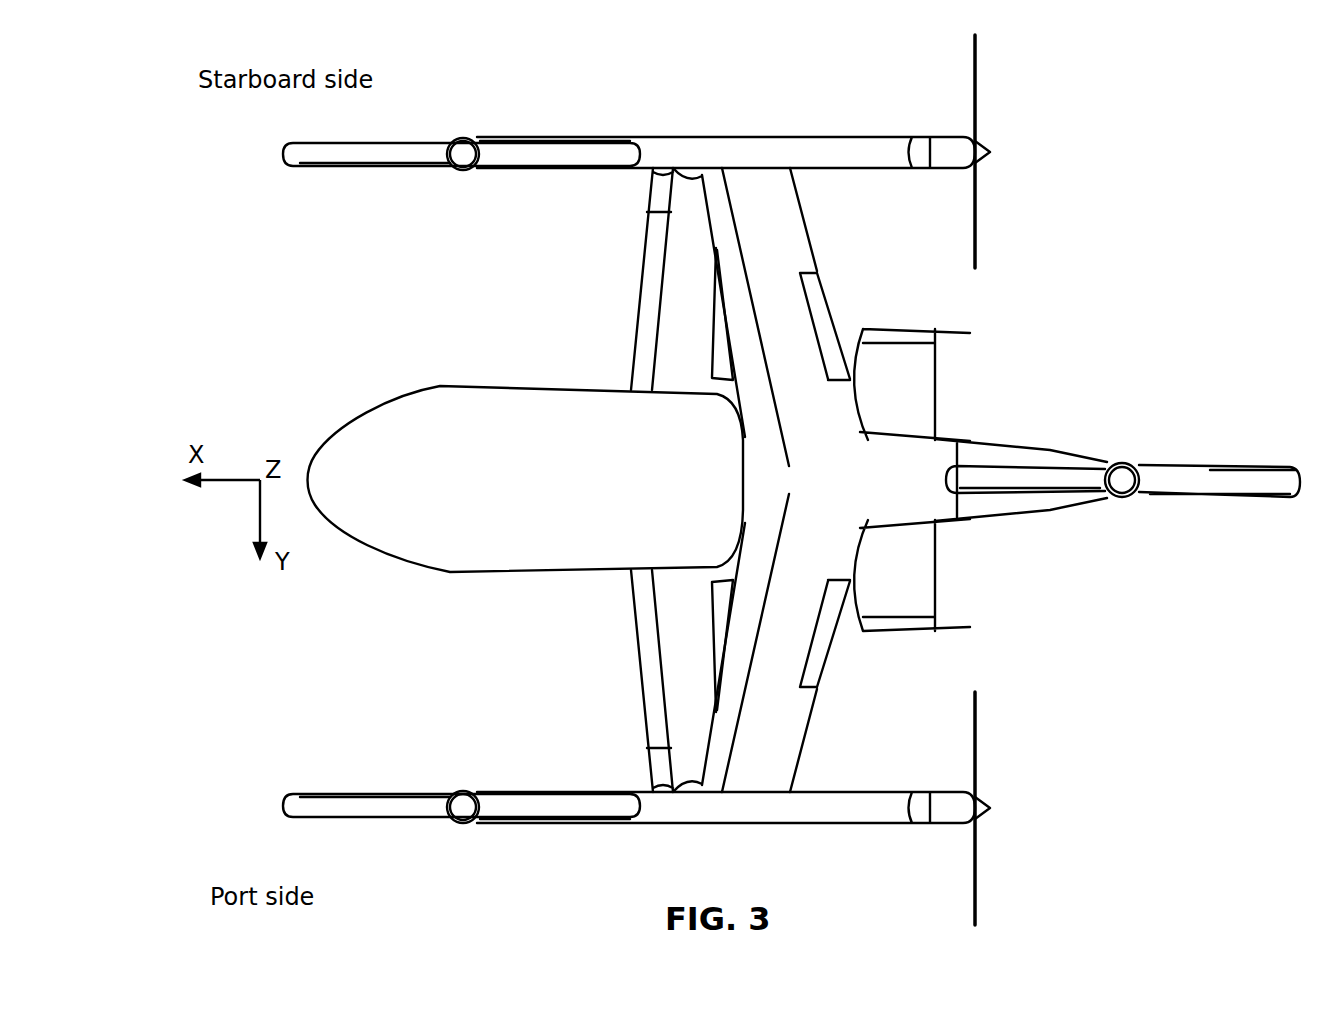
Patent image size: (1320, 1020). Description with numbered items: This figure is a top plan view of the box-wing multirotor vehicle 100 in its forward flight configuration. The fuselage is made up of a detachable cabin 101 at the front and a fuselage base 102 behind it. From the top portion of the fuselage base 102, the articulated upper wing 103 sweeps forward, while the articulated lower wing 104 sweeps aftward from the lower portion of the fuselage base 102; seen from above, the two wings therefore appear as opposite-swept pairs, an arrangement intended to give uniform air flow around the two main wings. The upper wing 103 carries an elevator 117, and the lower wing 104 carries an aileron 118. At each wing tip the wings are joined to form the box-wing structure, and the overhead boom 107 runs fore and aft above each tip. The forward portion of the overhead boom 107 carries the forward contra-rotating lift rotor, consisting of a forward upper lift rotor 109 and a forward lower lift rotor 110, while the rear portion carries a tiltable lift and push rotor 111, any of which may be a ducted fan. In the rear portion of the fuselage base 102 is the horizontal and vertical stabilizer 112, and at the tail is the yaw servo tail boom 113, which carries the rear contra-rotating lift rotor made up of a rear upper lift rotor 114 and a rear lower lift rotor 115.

The box-wing multirotor vehicle 100 is at (703, 86).
The detachable cabin 101 is at (377, 410).
The fuselage base 102 is at (907, 492).
The upper wing 103 is at (815, 252).
The lower wing 104 is at (633, 320).
The overhead boom 107 is at (648, 137).
The forward upper lift rotor 109 is at (355, 165).
The forward lower lift rotor 110 is at (463, 480).
The tiltable lift and push rotor 111 is at (977, 193).
The horizontal and vertical stabilizer 112 is at (937, 378).
The yaw servo tail boom 113 is at (1075, 467).
The rear upper lift rotor 114 is at (1263, 462).
The rear lower lift rotor 115 is at (1025, 479).
The elevator 117 is at (833, 323).
The aileron 118 is at (713, 362).